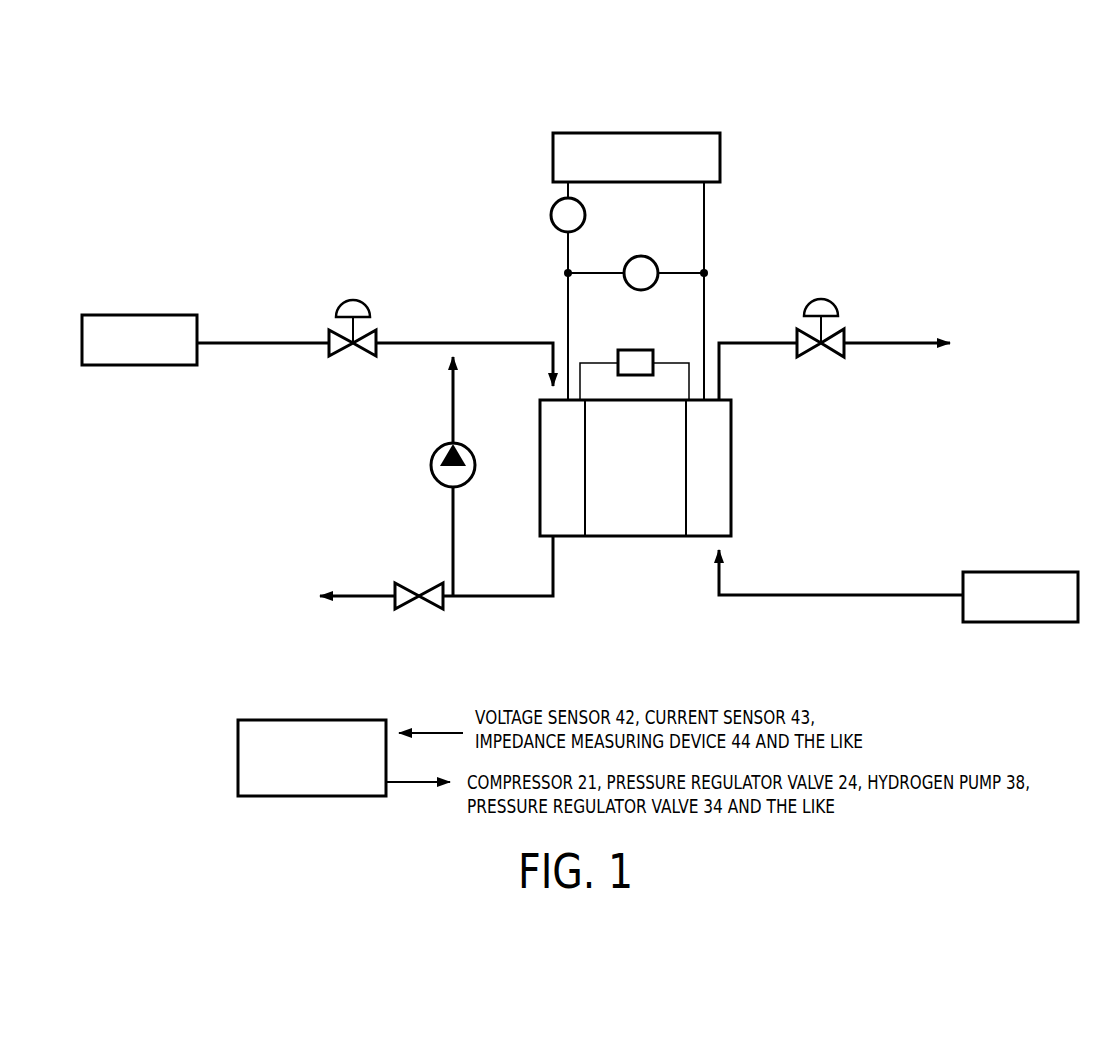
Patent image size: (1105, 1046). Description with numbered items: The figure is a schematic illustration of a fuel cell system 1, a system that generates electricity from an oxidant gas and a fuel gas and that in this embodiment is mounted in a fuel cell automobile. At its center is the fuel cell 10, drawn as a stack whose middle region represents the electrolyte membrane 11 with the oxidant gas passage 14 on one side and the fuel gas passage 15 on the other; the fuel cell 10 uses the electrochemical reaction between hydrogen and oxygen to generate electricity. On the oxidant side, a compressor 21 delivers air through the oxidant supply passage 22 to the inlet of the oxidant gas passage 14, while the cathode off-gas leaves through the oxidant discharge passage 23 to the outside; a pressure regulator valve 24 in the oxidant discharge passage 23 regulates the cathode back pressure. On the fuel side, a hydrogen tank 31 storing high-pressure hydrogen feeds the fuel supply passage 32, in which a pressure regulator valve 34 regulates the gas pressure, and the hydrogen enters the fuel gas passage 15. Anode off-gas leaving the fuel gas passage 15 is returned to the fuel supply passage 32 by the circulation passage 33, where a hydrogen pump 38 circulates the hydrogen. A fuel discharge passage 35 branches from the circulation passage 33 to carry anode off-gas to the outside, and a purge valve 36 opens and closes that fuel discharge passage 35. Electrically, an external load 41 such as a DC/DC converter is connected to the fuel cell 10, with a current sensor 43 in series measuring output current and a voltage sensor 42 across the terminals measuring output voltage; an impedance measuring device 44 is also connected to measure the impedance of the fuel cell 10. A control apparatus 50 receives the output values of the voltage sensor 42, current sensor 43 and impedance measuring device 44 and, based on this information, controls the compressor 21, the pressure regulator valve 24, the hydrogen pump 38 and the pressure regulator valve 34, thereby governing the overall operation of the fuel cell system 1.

The fuel cell system 1 is at (405, 86).
The fuel cell 10 is at (629, 612).
The electrolyte membrane 11 is at (641, 540).
The oxidant gas passage 14 is at (700, 540).
The fuel gas passage 15 is at (567, 540).
The compressor 21 is at (1037, 624).
The oxidant supply passage 22 is at (836, 600).
The oxidant discharge passage 23 is at (910, 340).
The pressure regulator valve 24 is at (812, 300).
The hydrogen tank 31 is at (146, 313).
The fuel supply passage 32 is at (424, 340).
The circulation passage 33 is at (514, 600).
The pressure regulator valve 34 is at (340, 300).
The fuel discharge passage 35 is at (358, 600).
The purge valve 36 is at (405, 608).
The hydrogen pump 38 is at (430, 467).
The external load 41 is at (722, 152).
The voltage sensor 42 is at (645, 254).
The current sensor 43 is at (550, 216).
The impedance measuring device 44 is at (626, 348).
The control apparatus 50 is at (312, 798).